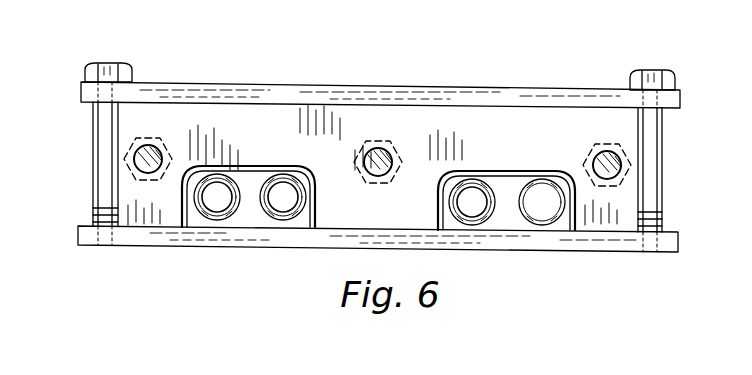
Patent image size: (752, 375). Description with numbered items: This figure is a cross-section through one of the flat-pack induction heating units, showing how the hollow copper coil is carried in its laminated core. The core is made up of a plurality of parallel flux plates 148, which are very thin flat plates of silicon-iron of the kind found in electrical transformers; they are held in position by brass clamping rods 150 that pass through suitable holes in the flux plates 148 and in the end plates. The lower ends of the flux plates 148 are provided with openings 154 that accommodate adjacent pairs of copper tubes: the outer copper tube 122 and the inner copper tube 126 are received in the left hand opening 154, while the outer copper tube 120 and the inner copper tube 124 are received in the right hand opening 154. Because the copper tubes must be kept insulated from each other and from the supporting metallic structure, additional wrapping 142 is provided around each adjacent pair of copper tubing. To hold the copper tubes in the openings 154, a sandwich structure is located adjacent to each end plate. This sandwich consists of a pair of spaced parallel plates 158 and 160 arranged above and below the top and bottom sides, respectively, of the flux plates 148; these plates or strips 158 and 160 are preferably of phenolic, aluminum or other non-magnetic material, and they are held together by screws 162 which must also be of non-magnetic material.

The outer hollow copper tube 120 is at (206, 222).
The outer hollow copper tube 122 is at (553, 233).
The inner hollow copper tube 124 is at (279, 222).
The inner hollow copper tube 126 is at (486, 228).
The additional wrapping 142 is at (246, 229).
The flux plates 148 is at (509, 143).
The brass clamping rods 150 is at (134, 158).
The openings 154 is at (305, 222).
The plate 158 is at (550, 92).
The plate 160 is at (133, 237).
The screws 162 is at (105, 68).